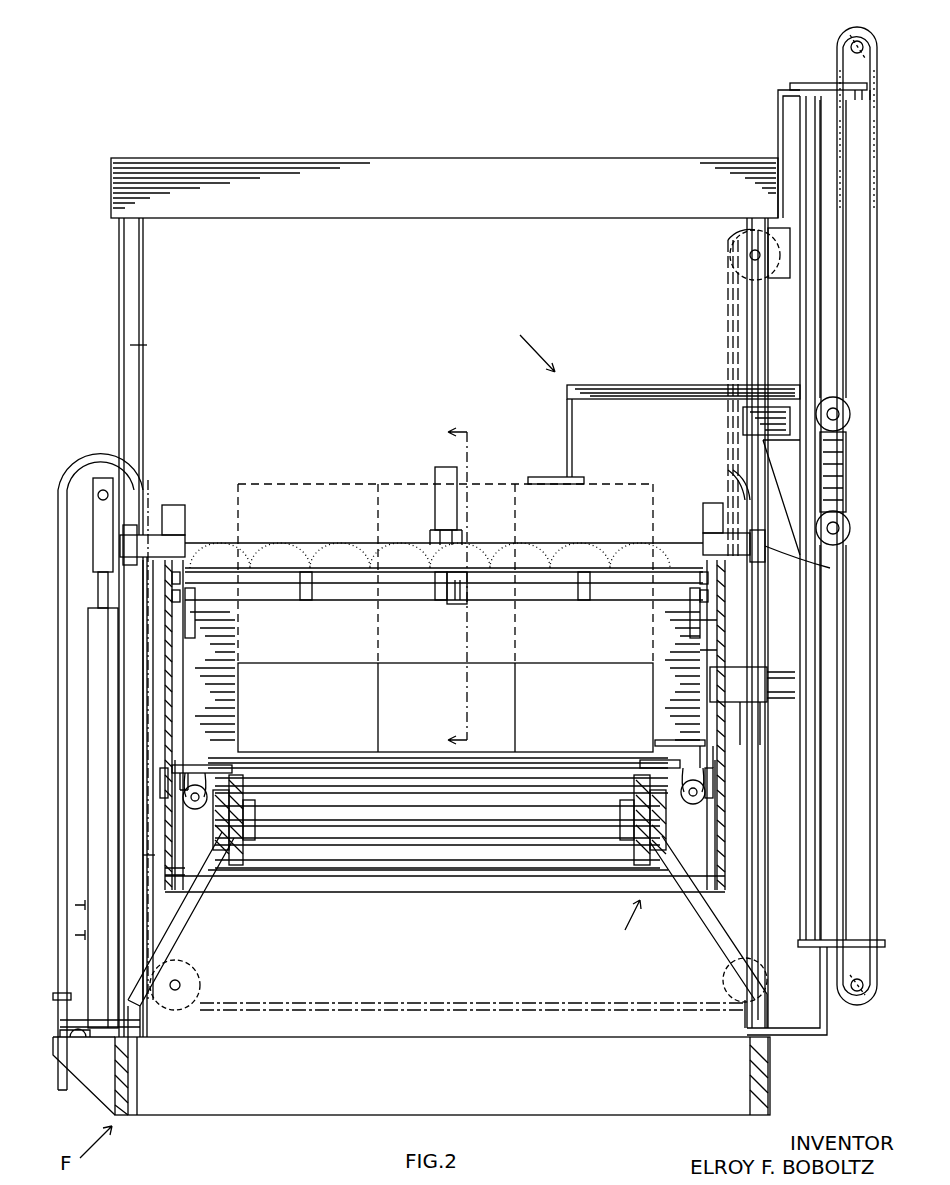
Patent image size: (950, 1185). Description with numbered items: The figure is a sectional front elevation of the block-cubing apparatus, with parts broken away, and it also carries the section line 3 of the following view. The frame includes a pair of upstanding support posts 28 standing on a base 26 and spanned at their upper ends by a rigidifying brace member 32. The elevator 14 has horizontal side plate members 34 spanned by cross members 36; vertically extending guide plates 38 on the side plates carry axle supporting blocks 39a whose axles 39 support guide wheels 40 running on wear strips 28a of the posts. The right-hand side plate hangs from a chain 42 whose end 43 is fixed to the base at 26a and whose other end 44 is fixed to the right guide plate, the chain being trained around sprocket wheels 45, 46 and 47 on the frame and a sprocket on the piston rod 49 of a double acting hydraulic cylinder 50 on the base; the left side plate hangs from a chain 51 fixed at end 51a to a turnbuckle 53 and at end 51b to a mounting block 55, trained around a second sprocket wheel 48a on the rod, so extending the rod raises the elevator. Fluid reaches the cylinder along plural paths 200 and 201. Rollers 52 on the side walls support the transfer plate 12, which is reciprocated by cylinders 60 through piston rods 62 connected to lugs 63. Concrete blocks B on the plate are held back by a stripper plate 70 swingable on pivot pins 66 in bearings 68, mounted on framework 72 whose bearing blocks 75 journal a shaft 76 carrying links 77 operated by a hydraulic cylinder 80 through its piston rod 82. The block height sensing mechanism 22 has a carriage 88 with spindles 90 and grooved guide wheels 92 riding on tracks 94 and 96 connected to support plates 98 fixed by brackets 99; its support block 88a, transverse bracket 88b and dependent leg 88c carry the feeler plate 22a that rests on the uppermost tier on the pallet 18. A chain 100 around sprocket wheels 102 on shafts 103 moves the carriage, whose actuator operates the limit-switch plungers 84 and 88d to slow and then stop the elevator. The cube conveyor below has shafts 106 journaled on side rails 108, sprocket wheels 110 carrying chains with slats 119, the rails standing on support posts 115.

The section line 3— 3 is at (447, 587).
The transfer plate 12 is at (665, 735).
The elevator 14 is at (624, 927).
The pallet 18 is at (520, 758).
The block height sensing mechanism 22 is at (527, 340).
The feeler plate 22a is at (535, 477).
The base 26 is at (135, 1067).
The chain anchorage on base 26a is at (78, 1037).
The support post 28 is at (143, 305).
The wear strip 28a is at (145, 348).
The rigidifying brace member 32 is at (505, 196).
The side plate member 34 is at (445, 825).
The cross member 36 is at (545, 880).
The guide plate 38 is at (175, 638).
The axle 39 is at (830, 568).
The axle supporting block 39a is at (175, 546).
The guide wheel 40 is at (150, 512).
The chain 42 is at (730, 290).
The chain end 43 is at (130, 1018).
The chain end 44 is at (712, 515).
The sprocket wheel 45 is at (200, 985).
The sprocket wheel 46 is at (735, 985).
The sprocket wheel 47 is at (735, 252).
The second sprocket wheel 48a is at (90, 470).
The piston rod 49 is at (98, 582).
The hydraulic cylinder 50 is at (90, 620).
The chain 51 is at (165, 690).
The chain end 51a is at (65, 985).
The chain end 51b is at (150, 860).
The roller 52 is at (160, 772).
The turnbuckle 53 is at (72, 991).
The mounting block 55 is at (168, 870).
The cylinder 60 is at (200, 785).
The piston rod 62 is at (190, 760).
The lug 63 is at (690, 740).
The pivot pin 66 is at (186, 600).
The bearing 68 is at (718, 638).
The stripper plate 70 is at (389, 645).
The framework 72 is at (262, 550).
The bearing block 75 is at (468, 585).
The shaft 76 is at (570, 585).
The link 77 is at (440, 592).
The hydraulic cylinder 80 is at (437, 472).
The piston rod 82 is at (435, 535).
The plunger 84 is at (795, 675).
The carriage 88 is at (848, 470).
The support block 88a is at (743, 418).
The transverse bracket 88b is at (630, 392).
The dependent leg 88c is at (574, 432).
The plunger 88d is at (795, 698).
The spindle 90 is at (836, 414).
The guide wheel 92 is at (845, 430).
The track 94 is at (862, 135).
The track 96 is at (808, 113).
The support plate 98 is at (806, 83).
The bracket 99 is at (780, 143).
The chain 100 is at (880, 88).
The sprocket wheel 102 is at (863, 47).
The shaft 103 is at (870, 40).
The shaft 106 is at (460, 822).
The side rail 108 is at (655, 868).
The sprocket wheel 110 is at (252, 865).
The support post 115 is at (192, 985).
The slat 119 is at (345, 775).
The fluid path 200 is at (85, 905).
The fluid path 201 is at (85, 935).
The concrete blocks B is at (305, 487).